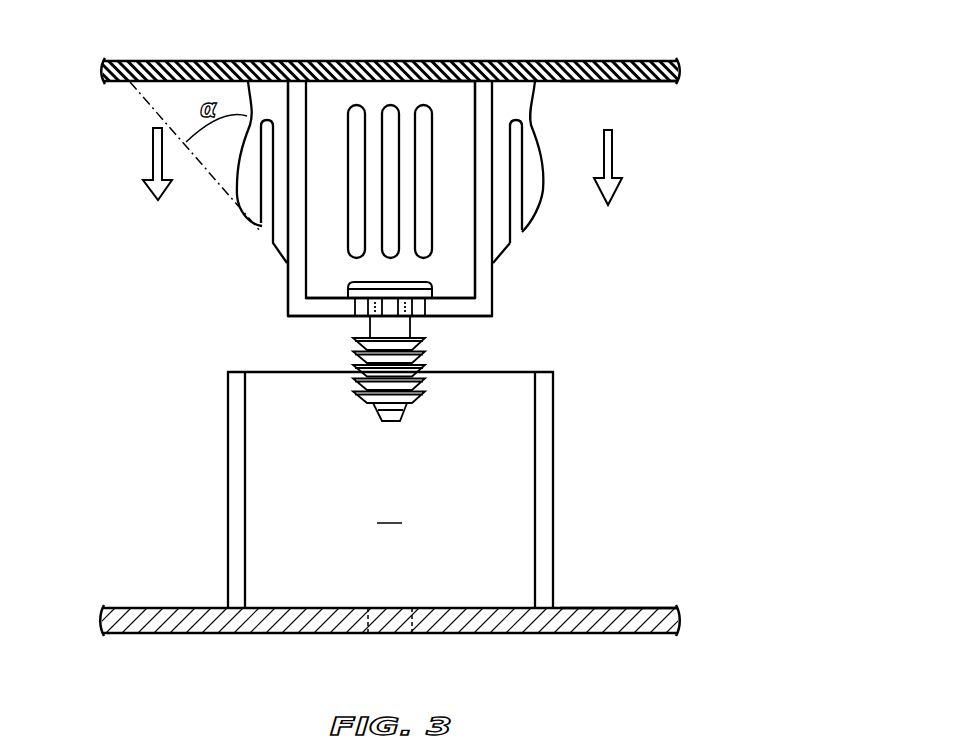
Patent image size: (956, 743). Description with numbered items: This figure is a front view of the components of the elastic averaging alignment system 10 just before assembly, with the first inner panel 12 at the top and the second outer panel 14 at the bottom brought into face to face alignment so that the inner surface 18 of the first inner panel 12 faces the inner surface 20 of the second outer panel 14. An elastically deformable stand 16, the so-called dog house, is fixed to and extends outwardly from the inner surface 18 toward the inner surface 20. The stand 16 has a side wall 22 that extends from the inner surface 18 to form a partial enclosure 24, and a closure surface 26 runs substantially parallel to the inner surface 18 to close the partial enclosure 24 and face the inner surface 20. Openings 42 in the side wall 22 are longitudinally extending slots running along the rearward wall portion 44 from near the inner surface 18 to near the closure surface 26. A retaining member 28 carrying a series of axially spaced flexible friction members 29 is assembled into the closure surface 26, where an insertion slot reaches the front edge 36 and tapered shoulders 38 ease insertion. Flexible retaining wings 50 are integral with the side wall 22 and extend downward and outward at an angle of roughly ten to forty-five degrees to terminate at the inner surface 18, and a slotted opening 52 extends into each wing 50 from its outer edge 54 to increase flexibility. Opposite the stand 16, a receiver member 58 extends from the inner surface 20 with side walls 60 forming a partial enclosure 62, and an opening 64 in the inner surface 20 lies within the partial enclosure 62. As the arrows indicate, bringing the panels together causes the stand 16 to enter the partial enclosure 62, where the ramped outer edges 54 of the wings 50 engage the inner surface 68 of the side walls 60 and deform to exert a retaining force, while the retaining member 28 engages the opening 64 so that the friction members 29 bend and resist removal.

The elastic averaging alignment system 10 is at (172, 362).
The first inner panel 12 is at (568, 60).
The second outer panel 14 is at (658, 603).
The elastically deformable stand 16 is at (413, 196).
The inner surface of first inner panel 18 is at (632, 83).
The inner surface of second outer panel 20 is at (613, 608).
The side wall 22 is at (297, 278).
The partial enclosure 24 is at (455, 108).
The closure surface 26 is at (470, 320).
The retaining member 28 is at (387, 380).
The flexible friction members 29 is at (423, 383).
The front edge of closure surface 36 is at (326, 312).
The tapered shoulders 38 is at (418, 312).
The openings 42 is at (422, 130).
The rearward wall portion 44 is at (452, 156).
The flexible retaining wings 50 is at (545, 210).
The slotted opening 52 is at (262, 228).
The outer edge 54 is at (503, 257).
The receiver member 58 is at (401, 490).
The side walls 60 is at (548, 445).
The partial enclosure 62 is at (389, 510).
The opening 64 is at (412, 620).
The inner surface of side walls 68 is at (246, 488).